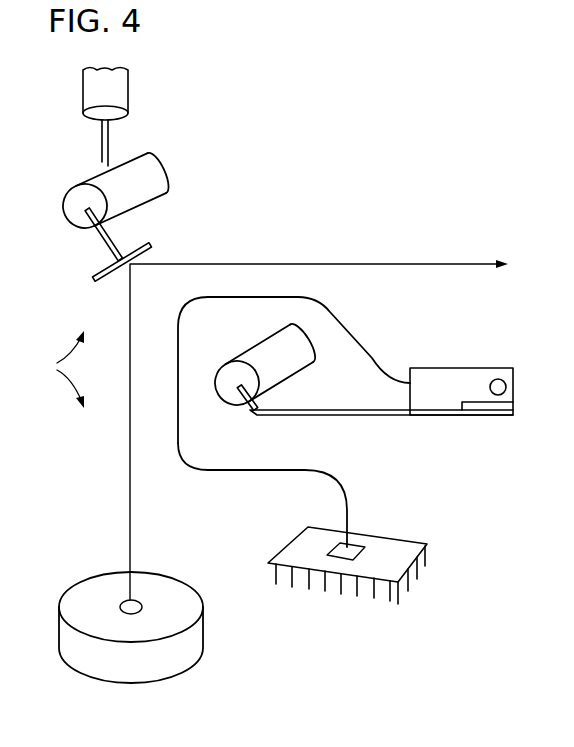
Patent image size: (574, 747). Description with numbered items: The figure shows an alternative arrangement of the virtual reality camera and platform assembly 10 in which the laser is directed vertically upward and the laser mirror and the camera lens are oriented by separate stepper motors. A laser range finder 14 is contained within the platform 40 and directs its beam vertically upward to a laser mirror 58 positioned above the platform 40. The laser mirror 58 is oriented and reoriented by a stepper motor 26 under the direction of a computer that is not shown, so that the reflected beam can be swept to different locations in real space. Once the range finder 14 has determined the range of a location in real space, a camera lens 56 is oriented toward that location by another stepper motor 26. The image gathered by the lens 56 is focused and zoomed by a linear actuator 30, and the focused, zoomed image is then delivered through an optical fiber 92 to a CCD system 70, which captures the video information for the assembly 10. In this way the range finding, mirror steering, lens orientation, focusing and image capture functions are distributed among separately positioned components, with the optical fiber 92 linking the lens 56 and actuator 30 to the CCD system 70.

The virtual reality camera and platform assembly 10 is at (333, 150).
The laser range finder 14 is at (54, 369).
The stepper motor 26 is at (123, 92).
The linear actuator 30 is at (450, 375).
The platform 40 is at (68, 598).
The camera lens 56 is at (500, 381).
The laser mirror 58 is at (150, 250).
The CCD system 70 is at (302, 540).
The optical fiber 92 is at (183, 453).